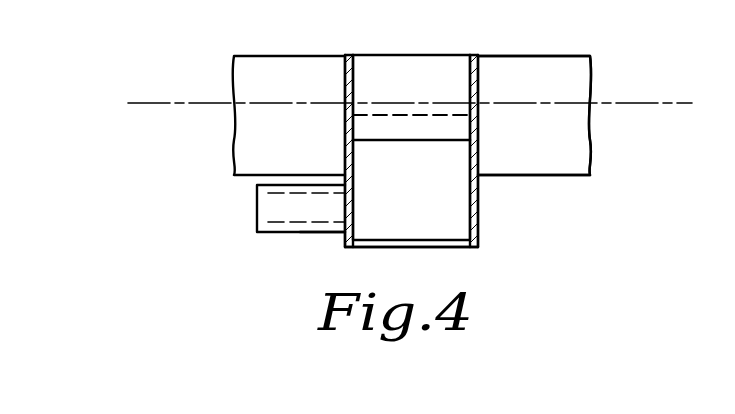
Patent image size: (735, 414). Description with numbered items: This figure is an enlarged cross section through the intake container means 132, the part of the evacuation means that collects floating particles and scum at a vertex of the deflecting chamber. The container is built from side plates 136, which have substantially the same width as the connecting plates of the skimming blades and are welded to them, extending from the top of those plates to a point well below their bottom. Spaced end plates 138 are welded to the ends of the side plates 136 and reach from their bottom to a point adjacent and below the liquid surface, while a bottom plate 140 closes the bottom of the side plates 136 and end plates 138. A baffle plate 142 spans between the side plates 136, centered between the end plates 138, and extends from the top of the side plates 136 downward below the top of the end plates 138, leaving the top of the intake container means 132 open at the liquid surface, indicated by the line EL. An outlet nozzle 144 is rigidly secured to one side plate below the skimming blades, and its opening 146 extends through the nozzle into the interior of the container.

The intake container means 132 is at (482, 204).
The side plate 136 is at (470, 86).
The end plate 138 is at (389, 228).
The bottom plate 140 is at (448, 247).
The baffle plate 142 is at (398, 62).
The outlet nozzle 144 is at (320, 235).
The opening 146 is at (272, 210).
The elevation line EL is at (645, 102).